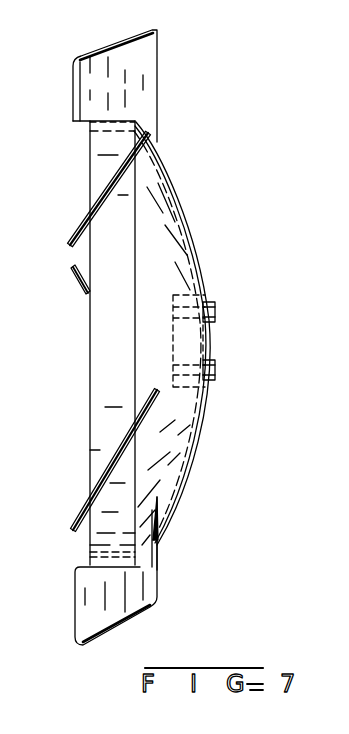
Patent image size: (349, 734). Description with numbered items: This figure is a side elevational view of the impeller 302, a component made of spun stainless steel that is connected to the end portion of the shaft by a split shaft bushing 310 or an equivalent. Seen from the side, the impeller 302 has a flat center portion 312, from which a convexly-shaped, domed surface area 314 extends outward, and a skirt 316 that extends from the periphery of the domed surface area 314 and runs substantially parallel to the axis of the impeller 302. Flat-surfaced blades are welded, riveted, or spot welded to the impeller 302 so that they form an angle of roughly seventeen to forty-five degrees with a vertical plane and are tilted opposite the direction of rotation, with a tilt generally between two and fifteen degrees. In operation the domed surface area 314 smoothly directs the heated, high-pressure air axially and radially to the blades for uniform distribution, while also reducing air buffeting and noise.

The impeller 302 is at (173, 180).
The split shaft bushing 310 is at (206, 346).
The flat center portion 312 is at (206, 299).
The convexly-shaped surface area 314 is at (190, 222).
The skirt 316 is at (105, 120).